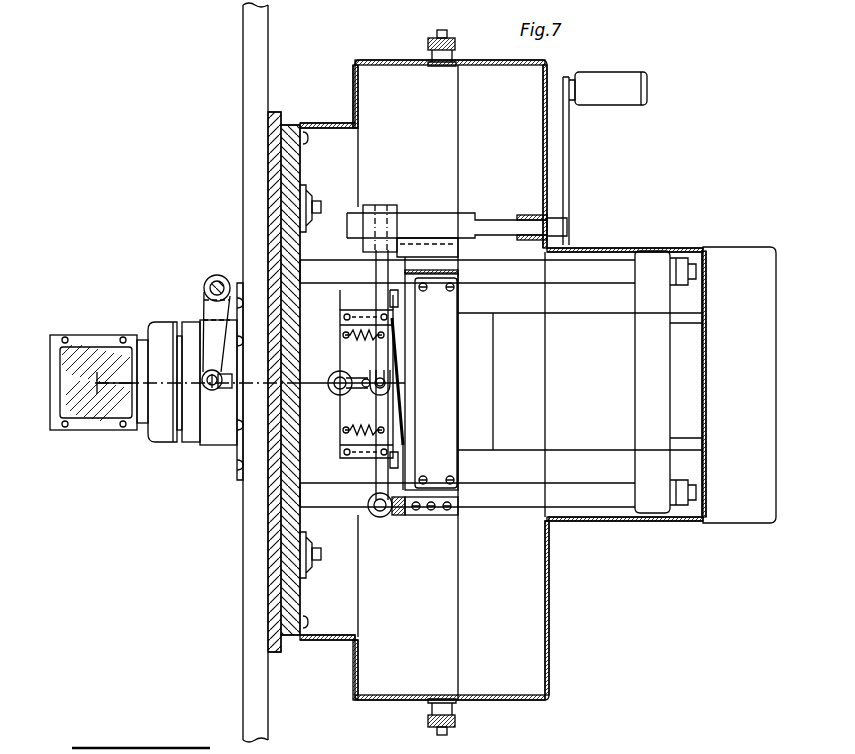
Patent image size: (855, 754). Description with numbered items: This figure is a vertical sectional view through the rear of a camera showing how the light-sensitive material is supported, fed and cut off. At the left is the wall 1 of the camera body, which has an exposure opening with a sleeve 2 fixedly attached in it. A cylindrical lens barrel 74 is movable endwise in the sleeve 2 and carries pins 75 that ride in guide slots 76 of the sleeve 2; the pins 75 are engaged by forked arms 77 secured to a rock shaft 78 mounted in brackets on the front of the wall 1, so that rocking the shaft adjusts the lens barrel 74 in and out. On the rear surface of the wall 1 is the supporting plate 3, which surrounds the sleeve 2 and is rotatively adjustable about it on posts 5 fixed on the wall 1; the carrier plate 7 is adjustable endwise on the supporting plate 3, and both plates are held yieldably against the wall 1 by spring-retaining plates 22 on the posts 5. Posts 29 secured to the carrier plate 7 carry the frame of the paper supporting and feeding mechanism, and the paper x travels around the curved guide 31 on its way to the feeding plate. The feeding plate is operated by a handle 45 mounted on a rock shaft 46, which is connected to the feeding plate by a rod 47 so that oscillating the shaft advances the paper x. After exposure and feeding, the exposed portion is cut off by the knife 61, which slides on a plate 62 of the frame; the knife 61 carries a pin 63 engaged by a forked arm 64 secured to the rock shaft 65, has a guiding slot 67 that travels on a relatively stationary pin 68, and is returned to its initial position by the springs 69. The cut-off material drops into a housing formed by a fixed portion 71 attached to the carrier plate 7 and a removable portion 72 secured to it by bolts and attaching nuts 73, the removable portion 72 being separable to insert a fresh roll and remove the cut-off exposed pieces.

The wall 1 is at (252, 600).
The sleeve 2 is at (229, 445).
The supporting plate 3 is at (276, 655).
The posts 5 is at (323, 210).
The carrier plate 7 is at (290, 637).
The spring-retaining plates 22 is at (310, 204).
The posts 29 is at (603, 278).
The curved guide 31 is at (604, 444).
The handle 45 is at (625, 98).
The rock shaft 46 is at (496, 220).
The rod 47 is at (375, 256).
The knife 61 is at (395, 358).
The plate 62 is at (340, 356).
The pin 63 is at (392, 383).
The forked arm 64 is at (398, 414).
The rock shaft 65 is at (381, 511).
The guiding slot 67 is at (348, 393).
The pin 68 is at (364, 379).
The springs 69 is at (356, 320).
The fixed portion 71 is at (372, 698).
The removable portion 72 is at (552, 638).
The attaching nuts 73 is at (456, 48).
The lens barrel 74 is at (192, 445).
The pins 75 is at (209, 391).
The guide slots 76 is at (232, 380).
The forked arms 77 is at (206, 310).
The rock shaft 78 is at (218, 276).
The paper x is at (418, 428).